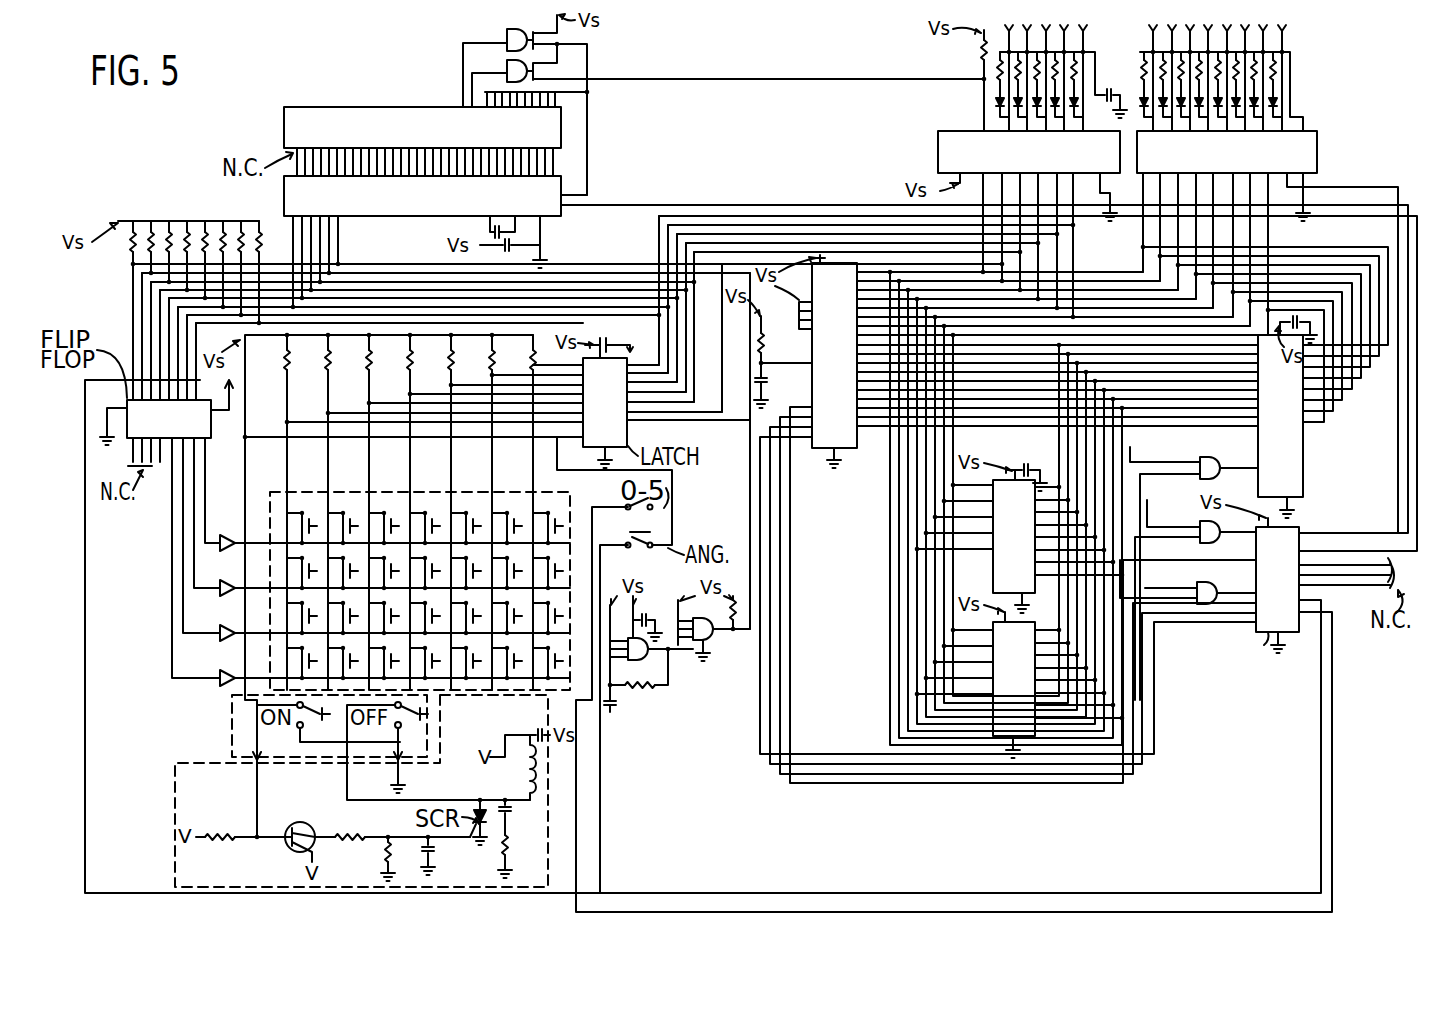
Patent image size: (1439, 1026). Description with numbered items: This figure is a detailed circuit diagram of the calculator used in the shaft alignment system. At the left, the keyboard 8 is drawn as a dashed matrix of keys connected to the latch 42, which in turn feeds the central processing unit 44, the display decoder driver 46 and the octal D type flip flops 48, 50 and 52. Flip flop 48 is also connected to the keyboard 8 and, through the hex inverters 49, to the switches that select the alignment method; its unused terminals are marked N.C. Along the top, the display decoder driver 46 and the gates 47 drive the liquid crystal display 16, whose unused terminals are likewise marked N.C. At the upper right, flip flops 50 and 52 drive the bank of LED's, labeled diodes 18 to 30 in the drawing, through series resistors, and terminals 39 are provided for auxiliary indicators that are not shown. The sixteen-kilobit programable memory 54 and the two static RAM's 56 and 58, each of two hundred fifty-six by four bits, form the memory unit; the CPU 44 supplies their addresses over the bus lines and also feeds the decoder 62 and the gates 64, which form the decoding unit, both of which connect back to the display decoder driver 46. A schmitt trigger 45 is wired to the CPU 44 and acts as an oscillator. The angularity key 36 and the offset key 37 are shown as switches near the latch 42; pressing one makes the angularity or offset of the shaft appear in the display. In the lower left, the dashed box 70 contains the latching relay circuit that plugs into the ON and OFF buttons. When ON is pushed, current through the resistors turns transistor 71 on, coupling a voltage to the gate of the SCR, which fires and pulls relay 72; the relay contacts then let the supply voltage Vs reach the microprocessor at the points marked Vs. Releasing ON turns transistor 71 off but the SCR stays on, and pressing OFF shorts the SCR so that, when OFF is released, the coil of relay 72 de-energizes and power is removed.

The keyboard 8 is at (440, 490).
The liquid crystal display 16 is at (375, 142).
The LED 18 is at (995, 105).
The LED 30 is at (1221, 78).
The angularity (ANG) key 36 is at (655, 548).
The offset (O-S) key 37 is at (624, 498).
The terminals 39 is at (1291, 30).
The latch 42 is at (620, 414).
The central processing unit 44 is at (848, 332).
The schmitt trigger 45 is at (711, 643).
The display decoder driver 46 is at (368, 210).
The gates 47 is at (507, 71).
The octal D type flip flop 48 is at (178, 434).
The hex inverters 49 is at (238, 540).
The octal D type flip flop 50 is at (978, 169).
The octal D type flip flop 52 is at (1177, 169).
The 16K programable memory 54 is at (1293, 394).
The 256×4 bits static RAM 56 is at (1027, 524).
The 256×4 bits static RAM 58 is at (1027, 662).
The decoder 62 is at (1290, 594).
The gates 64 is at (1199, 463).
The latching relay circuit box 70 is at (173, 790).
The transistor 71 is at (289, 848).
The relay 72 is at (521, 784).